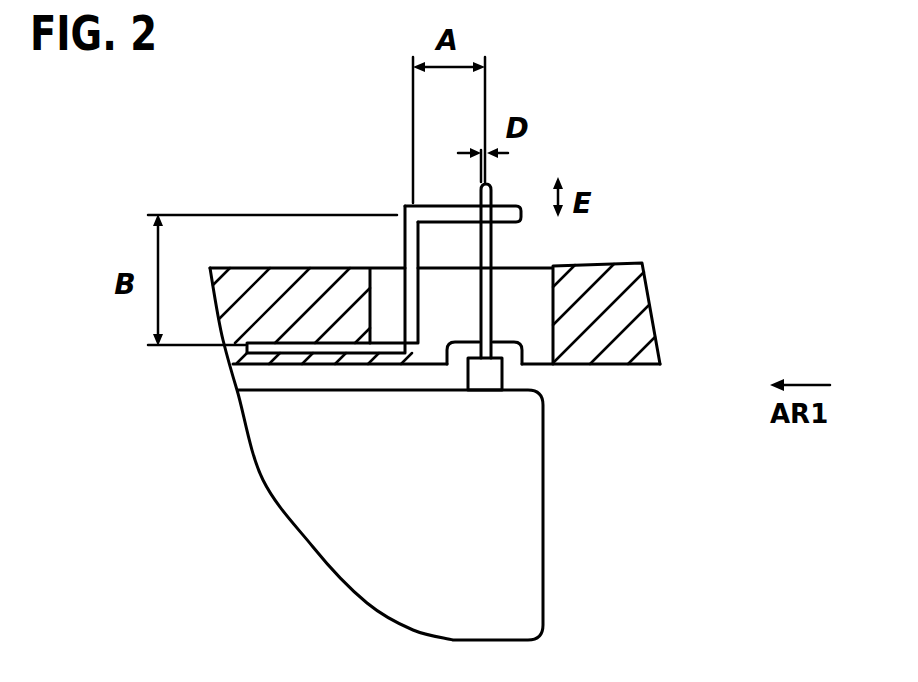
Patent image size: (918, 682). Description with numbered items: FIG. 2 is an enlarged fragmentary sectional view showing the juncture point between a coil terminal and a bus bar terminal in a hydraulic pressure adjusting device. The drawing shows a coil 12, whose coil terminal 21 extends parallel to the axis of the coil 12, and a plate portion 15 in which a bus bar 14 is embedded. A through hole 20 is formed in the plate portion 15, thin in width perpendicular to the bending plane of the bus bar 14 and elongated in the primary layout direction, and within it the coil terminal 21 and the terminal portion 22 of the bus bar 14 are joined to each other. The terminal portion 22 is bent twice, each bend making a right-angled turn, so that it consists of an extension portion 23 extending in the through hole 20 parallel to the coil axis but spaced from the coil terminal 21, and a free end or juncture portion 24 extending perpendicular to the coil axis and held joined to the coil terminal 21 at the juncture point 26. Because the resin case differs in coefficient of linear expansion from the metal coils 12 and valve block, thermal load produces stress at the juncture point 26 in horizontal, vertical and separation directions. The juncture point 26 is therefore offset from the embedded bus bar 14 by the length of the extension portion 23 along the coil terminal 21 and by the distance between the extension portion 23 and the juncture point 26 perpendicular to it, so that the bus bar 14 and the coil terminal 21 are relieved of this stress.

The coil 12 is at (527, 573).
The bus bar 14 is at (298, 353).
The plate portion 15 is at (632, 302).
The through hole 20 is at (527, 357).
The coil terminal 21 is at (489, 287).
The terminal portion 22 is at (384, 214).
The extension portion 23 is at (403, 252).
The juncture portion 24 is at (440, 205).
The juncture point 26 is at (497, 202).